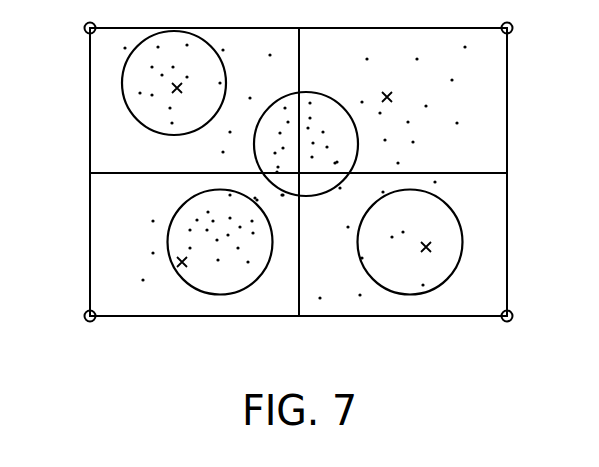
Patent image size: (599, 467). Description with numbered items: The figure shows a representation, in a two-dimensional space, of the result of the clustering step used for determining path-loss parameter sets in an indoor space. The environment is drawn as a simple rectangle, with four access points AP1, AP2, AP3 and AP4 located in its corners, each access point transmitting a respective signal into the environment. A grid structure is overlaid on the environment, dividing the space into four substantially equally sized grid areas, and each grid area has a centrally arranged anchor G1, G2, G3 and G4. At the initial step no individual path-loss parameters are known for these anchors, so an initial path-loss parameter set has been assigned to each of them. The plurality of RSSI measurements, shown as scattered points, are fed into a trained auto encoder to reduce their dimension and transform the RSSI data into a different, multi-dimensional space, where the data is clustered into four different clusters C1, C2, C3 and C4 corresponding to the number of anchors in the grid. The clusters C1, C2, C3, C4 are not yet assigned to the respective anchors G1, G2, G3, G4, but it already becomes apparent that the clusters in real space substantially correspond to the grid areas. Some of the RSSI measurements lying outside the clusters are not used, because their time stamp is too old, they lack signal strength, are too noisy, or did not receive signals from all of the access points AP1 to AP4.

The access point AP1 is at (63, 316).
The access point AP2 is at (537, 316).
The access point AP3 is at (538, 27).
The access point AP4 is at (60, 28).
The cluster C1 is at (226, 248).
The cluster C2 is at (427, 242).
The cluster C3 is at (306, 128).
The cluster C4 is at (193, 83).
The anchor G1 is at (181, 275).
The anchor G2 is at (423, 260).
The anchor G3 is at (408, 97).
The anchor G4 is at (192, 102).